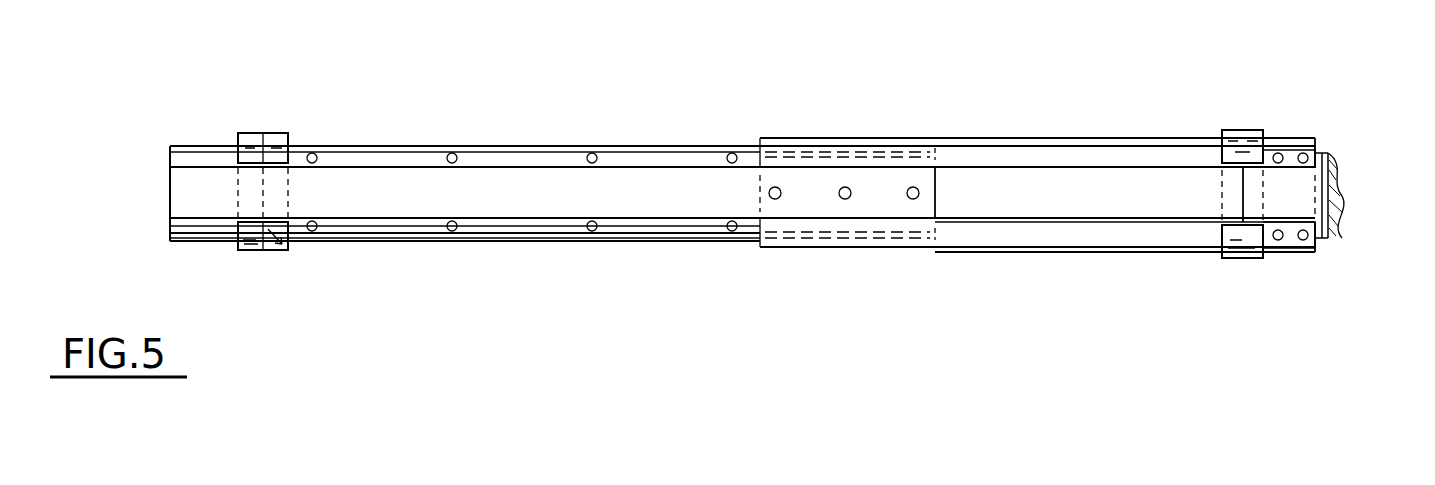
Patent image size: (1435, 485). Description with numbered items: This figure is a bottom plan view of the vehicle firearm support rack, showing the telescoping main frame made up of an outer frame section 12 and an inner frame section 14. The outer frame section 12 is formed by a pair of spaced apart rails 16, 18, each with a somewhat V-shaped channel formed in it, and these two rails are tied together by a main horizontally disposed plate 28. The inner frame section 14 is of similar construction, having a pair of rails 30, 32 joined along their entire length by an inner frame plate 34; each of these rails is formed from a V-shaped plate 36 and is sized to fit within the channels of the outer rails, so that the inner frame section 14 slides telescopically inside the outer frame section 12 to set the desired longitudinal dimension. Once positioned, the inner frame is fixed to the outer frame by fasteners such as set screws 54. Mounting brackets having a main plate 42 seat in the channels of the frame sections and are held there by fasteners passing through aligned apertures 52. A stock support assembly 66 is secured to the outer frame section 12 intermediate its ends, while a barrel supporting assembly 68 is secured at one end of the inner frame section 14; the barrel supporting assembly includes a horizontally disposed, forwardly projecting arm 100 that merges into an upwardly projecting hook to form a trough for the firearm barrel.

The outer frame section 12 is at (1037, 173).
The inner frame section 14 is at (742, 182).
The rail 16 is at (1160, 164).
The rail 18 is at (860, 247).
The main horizontally disposed plate 28 is at (1100, 187).
The rail 30 is at (375, 142).
The rail 32 is at (410, 235).
The inner frame plate 34 is at (640, 188).
The V-shaped plate 36 is at (580, 232).
The main plate 42 is at (1330, 172).
The aperture 52 is at (1288, 205).
The set screw 54 is at (843, 187).
The stock support assembly 66 is at (1240, 112).
The barrel supporting assembly 68 is at (266, 118).
The arm 100 is at (288, 247).